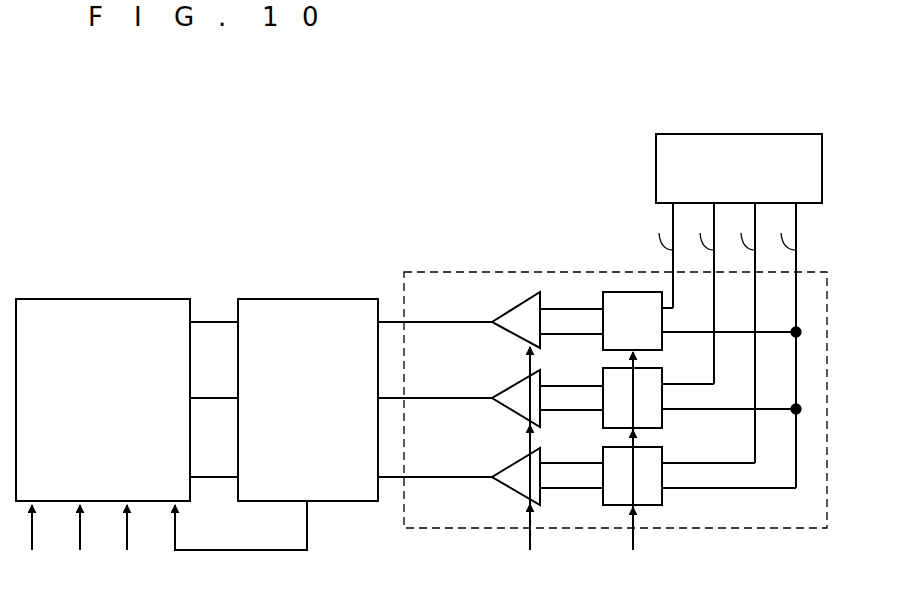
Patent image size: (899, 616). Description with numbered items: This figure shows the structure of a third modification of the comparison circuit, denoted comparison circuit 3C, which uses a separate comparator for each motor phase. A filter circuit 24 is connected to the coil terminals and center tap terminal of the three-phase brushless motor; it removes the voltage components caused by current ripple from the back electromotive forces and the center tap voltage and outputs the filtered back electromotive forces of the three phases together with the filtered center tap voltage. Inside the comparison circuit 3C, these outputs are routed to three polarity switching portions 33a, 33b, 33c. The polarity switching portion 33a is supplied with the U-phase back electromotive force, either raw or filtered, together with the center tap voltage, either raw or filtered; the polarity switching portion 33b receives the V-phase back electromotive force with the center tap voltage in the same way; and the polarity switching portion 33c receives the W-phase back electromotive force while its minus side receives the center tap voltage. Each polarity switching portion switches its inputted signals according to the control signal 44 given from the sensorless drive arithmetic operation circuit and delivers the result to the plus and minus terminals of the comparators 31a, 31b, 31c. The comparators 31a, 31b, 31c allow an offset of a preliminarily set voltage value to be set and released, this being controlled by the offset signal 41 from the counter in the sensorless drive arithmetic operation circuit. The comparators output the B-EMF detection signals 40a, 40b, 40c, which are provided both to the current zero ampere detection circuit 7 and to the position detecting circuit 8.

The position detecting circuit 8 is at (104, 299).
The current zero ampere detection circuit 7 is at (311, 299).
The filter circuit 24 is at (716, 131).
The B-EMF detection signal 40a is at (452, 306).
The B-EMF detection signal 40b is at (452, 382).
The B-EMF detection signal 40c is at (452, 461).
The comparator 31a is at (549, 320).
The comparator 31b is at (549, 397).
The comparator 31c is at (549, 476).
The polarity switching portion 33a is at (699, 321).
The polarity switching portion 33b is at (699, 398).
The polarity switching portion 33c is at (699, 476).
The offset signal 41 is at (530, 462).
The control signal 44 is at (635, 465).
The comparison circuit 3C is at (832, 388).